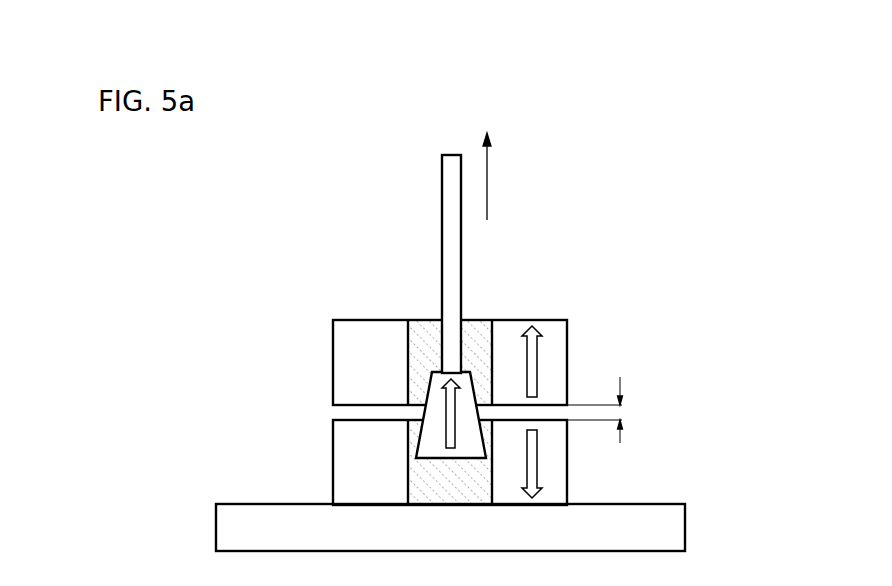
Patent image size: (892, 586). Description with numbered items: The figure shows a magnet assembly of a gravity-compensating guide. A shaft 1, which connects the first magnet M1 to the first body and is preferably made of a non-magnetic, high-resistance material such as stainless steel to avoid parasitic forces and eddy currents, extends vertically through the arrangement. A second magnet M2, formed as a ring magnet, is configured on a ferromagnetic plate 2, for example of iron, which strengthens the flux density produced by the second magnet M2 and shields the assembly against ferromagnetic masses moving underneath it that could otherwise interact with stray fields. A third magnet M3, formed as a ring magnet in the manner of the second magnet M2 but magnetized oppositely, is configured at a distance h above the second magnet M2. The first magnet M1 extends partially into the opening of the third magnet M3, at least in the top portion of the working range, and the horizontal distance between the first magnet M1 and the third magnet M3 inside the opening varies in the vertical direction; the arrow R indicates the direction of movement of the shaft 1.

The shaft 1 is at (450, 227).
The ferromagnetic plate 2 is at (672, 528).
The first magnet M1 is at (433, 437).
The second magnet M2 is at (557, 480).
The third magnet M3 is at (552, 346).
The direction of movement R is at (498, 176).
The distance h is at (602, 405).